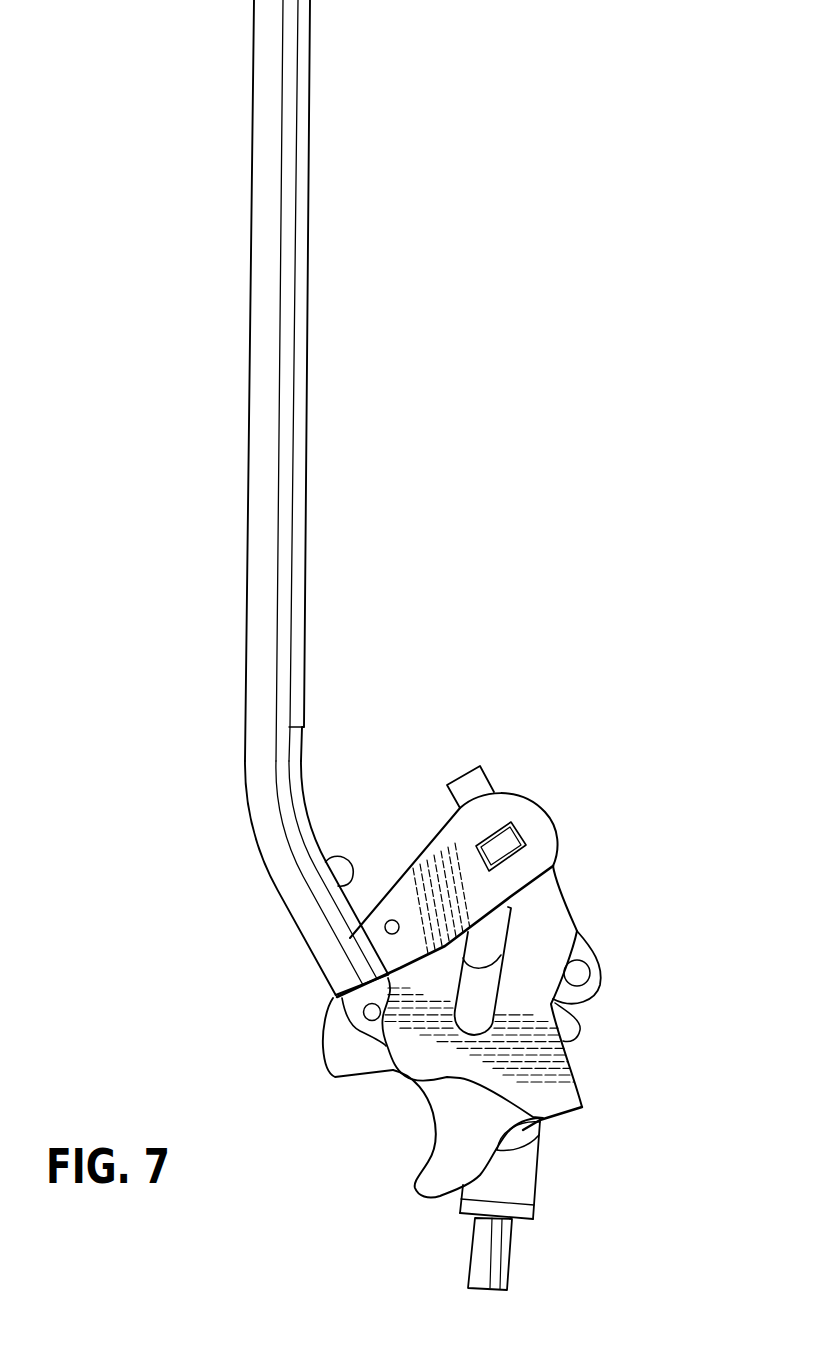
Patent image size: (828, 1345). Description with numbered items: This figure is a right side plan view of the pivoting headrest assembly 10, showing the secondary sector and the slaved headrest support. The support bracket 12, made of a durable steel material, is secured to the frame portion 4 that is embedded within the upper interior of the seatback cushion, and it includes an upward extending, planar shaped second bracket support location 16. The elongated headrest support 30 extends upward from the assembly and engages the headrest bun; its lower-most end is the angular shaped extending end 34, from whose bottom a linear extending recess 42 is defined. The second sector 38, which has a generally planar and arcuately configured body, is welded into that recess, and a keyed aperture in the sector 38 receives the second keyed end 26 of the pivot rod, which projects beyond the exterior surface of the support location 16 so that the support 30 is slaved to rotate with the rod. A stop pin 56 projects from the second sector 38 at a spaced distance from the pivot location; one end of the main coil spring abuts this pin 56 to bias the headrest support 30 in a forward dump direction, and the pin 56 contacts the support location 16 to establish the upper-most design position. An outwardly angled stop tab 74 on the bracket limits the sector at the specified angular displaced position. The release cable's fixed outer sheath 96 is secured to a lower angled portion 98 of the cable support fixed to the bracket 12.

The frame portion 4 is at (438, 1132).
The pivoting headrest assembly 10 is at (630, 932).
The support bracket 12 is at (578, 1084).
The second bracket support location 16 is at (568, 885).
The second keyed end 26 is at (513, 834).
The headrest support 30 is at (258, 503).
The angular shaped extending end 34 is at (285, 902).
The second sector 38 is at (502, 805).
The linear extending recess 42 is at (347, 880).
The stop pin 56 is at (391, 920).
The stop tab 74 is at (458, 774).
The fixed outer sheath 96 is at (507, 1240).
The lower angled portion 98 is at (540, 1170).